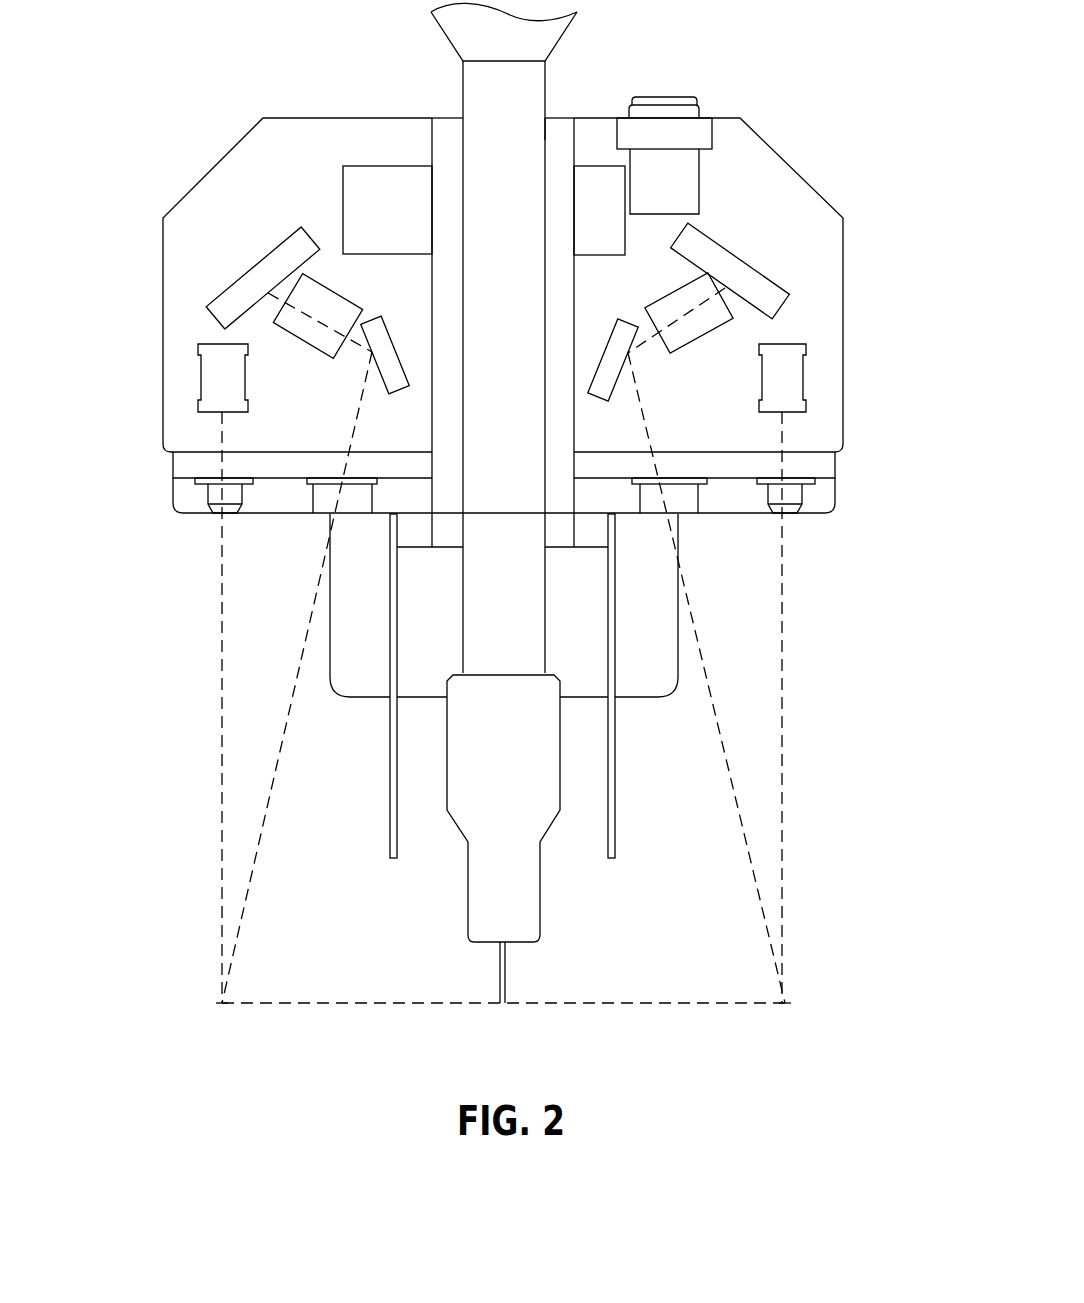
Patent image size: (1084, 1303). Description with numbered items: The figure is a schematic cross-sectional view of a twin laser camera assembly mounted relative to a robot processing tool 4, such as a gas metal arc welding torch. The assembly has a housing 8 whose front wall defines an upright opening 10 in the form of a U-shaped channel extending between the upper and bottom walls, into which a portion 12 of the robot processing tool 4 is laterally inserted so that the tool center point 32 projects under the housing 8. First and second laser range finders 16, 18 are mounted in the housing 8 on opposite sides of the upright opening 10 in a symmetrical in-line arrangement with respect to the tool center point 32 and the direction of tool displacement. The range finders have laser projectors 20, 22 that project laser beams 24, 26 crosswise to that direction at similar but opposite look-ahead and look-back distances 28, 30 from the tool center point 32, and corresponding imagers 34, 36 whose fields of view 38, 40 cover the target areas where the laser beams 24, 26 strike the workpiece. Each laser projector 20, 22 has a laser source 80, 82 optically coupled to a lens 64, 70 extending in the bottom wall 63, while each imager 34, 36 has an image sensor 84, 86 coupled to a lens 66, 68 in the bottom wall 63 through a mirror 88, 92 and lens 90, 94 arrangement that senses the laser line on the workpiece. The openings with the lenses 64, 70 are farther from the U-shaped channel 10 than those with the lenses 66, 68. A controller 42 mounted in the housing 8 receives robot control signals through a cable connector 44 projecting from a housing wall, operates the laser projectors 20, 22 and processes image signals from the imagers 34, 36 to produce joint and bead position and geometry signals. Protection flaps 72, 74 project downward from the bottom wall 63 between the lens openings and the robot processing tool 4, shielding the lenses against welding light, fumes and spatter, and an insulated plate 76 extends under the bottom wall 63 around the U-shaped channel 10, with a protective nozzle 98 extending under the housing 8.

The robot processing tool 4 is at (452, 893).
The housing 8 is at (237, 143).
The upright opening 10 is at (565, 130).
The portion of the robot processing tool 12 is at (522, 118).
The first laser range finder 16 is at (223, 339).
The second laser range finder 18 is at (776, 336).
The laser projector 20 is at (155, 367).
The laser projector 22 is at (850, 372).
The laser beam 24 is at (222, 697).
The laser beam 26 is at (785, 680).
The look-ahead distance 28 is at (222, 1003).
The look-back distance 30 is at (785, 1003).
The tool center point 32 is at (504, 1005).
The imager 34 is at (255, 247).
The imager 36 is at (753, 248).
The field of view 38 is at (265, 820).
The field of view 40 is at (735, 815).
The controller 42 is at (385, 173).
The cable connector 44 is at (695, 108).
The bottom wall 63 is at (823, 475).
The lens 64 is at (200, 485).
The lens 66 is at (312, 490).
The lens 68 is at (705, 485).
The lens 70 is at (812, 485).
The protection flap 72 is at (390, 772).
The protection flap 74 is at (615, 772).
The insulated plate 76 is at (602, 535).
The laser source 80 is at (207, 364).
The laser source 82 is at (803, 354).
The image sensor 84 is at (237, 288).
The image sensor 86 is at (777, 290).
The mirror 88 is at (388, 375).
The lens 90 is at (292, 325).
The mirror 92 is at (612, 370).
The lens 94 is at (717, 322).
The protective nozzle 98 is at (822, 512).